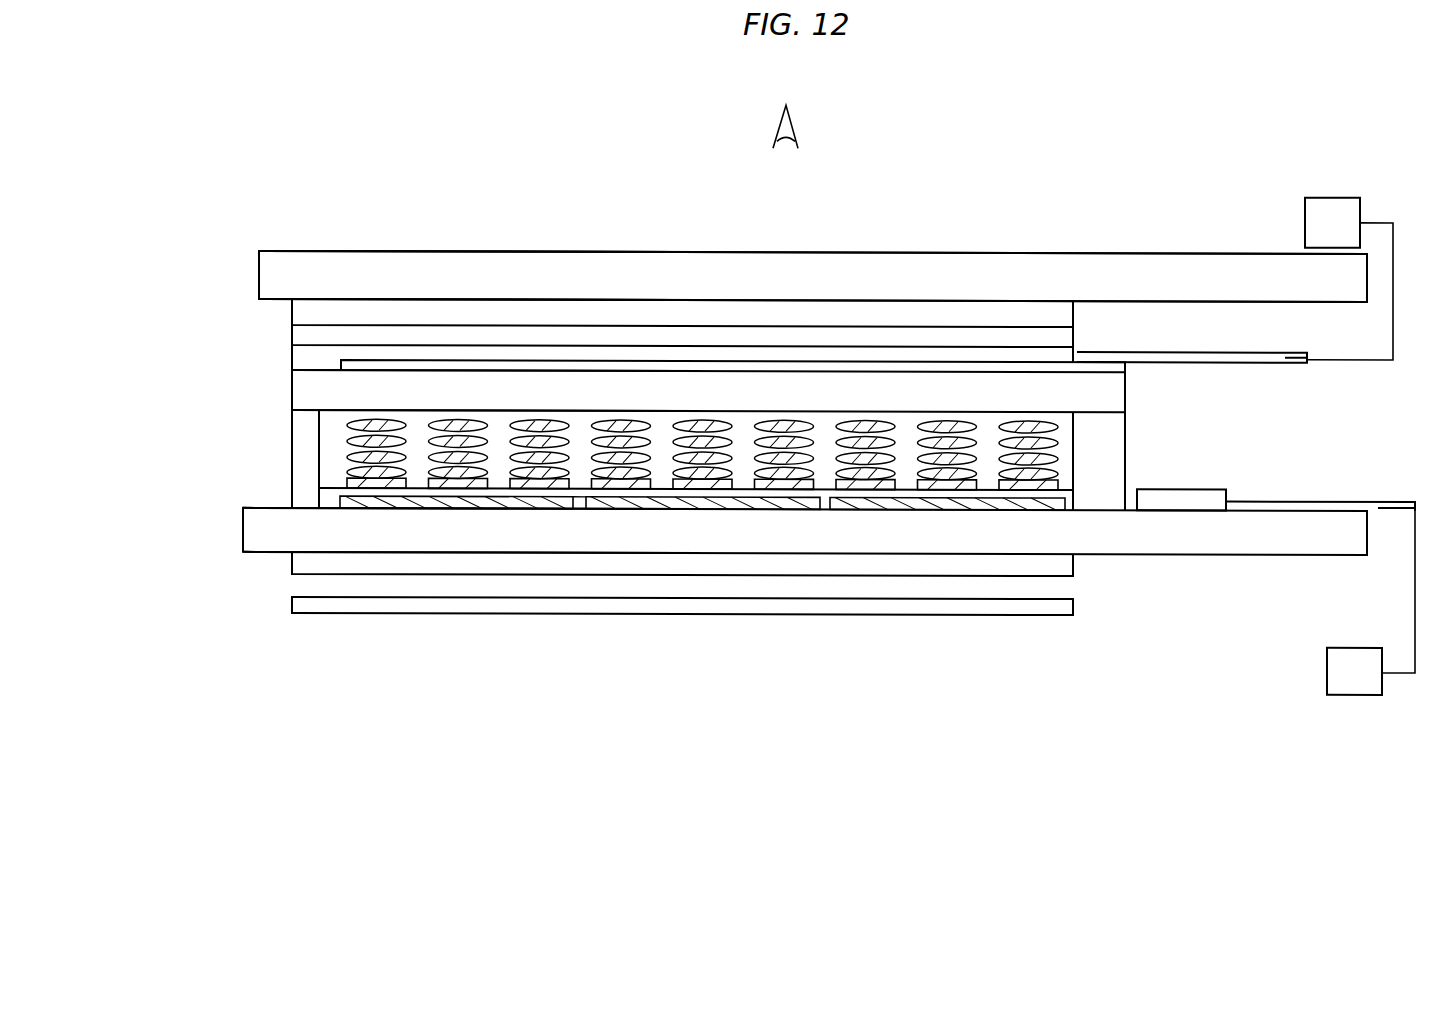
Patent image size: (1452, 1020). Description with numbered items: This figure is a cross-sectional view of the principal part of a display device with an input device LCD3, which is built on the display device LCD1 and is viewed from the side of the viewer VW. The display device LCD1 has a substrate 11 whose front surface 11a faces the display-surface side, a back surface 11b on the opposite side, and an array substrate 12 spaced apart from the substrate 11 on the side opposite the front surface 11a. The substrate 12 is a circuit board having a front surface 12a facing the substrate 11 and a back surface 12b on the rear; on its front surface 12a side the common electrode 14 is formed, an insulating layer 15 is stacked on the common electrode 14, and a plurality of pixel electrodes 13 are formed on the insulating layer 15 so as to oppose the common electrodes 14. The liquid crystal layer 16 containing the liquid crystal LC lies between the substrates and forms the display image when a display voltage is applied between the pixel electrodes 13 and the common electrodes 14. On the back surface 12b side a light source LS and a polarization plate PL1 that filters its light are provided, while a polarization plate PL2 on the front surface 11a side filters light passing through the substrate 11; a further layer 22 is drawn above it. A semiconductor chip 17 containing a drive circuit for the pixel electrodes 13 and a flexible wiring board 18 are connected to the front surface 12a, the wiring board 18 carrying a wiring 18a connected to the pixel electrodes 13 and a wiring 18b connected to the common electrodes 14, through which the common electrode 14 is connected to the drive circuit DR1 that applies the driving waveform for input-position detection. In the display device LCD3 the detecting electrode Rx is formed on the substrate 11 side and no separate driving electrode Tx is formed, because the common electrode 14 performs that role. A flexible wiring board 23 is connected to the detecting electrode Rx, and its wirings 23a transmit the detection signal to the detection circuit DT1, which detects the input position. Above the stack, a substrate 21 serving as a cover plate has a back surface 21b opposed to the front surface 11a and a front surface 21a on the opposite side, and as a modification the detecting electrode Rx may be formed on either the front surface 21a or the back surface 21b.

The substrate 21 is at (352, 267).
The front surface 21a is at (303, 251).
The back surface 21b is at (302, 300).
The adhesive layer 22 is at (503, 307).
The substrate 11 is at (320, 388).
The front surface 11a is at (341, 360).
The second surface of counter substrate 11b is at (335, 412).
The substrate 12 is at (275, 527).
The front surface 12a is at (325, 505).
The back surface 12b is at (333, 553).
The pixel electrode 13 is at (362, 486).
The common electrode 14 is at (702, 587).
The insulating layer 15 is at (580, 490).
The liquid crystal layer 16 is at (1075, 486).
The semiconductor chip 17 is at (1213, 495).
The wiring board 18 is at (1320, 532).
The wiring 18a is at (1320, 588).
The wiring 18b is at (1347, 502).
The wiring board 23 is at (1235, 290).
The wirings 23a is at (1261, 355).
The detecting electrode Rx is at (591, 367).
The driving electrode Tx is at (475, 506).
The liquid crystal layer LC is at (1036, 430).
The polarization plate PL1 is at (897, 565).
The polarization plate PL2 is at (1063, 337).
The light source LS is at (800, 605).
The detection circuit DT1 is at (1333, 220).
The drive circuit DR1 is at (1327, 670).
The viewer VW is at (808, 116).
The display device LCD1 is at (215, 325).
The display device with an input device LCD3 is at (1129, 217).